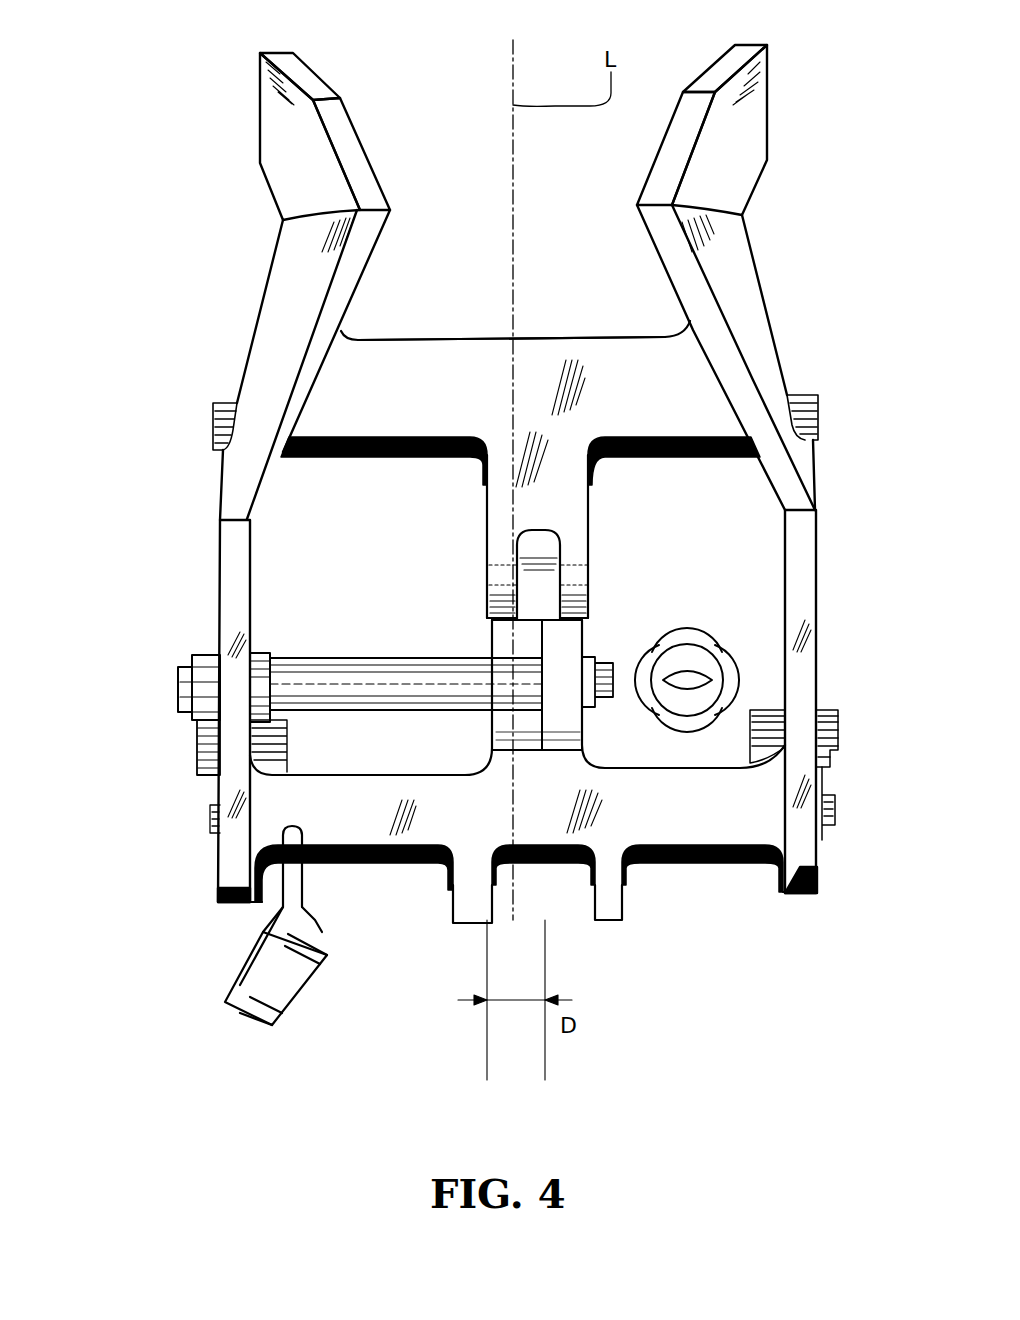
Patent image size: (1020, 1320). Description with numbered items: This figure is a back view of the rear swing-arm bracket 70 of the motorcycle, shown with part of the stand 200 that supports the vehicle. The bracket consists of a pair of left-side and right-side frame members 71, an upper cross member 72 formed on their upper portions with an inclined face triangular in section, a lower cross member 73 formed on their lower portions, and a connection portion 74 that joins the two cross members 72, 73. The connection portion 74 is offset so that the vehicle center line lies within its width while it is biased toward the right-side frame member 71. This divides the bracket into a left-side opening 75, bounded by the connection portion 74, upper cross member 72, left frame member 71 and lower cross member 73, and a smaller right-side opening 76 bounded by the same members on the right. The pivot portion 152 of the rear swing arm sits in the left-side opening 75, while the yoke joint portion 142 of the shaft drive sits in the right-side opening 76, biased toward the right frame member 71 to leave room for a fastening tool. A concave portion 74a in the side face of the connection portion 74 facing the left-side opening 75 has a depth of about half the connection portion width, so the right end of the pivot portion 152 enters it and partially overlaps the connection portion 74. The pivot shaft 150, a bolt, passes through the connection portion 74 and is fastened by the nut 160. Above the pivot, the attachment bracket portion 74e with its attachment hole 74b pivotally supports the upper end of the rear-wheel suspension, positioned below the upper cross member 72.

The rear swing-arm bracket 70 is at (233, 322).
The frame member 71 is at (215, 557).
The upper cross member 72 is at (408, 340).
The lower cross member 73 is at (667, 808).
The connection portion 74 is at (590, 506).
The concave portion 74a is at (503, 638).
The attachment hole 74b is at (500, 581).
The attachment bracket portion 74e is at (537, 595).
The left-side opening 75 is at (384, 526).
The right-side opening 76 is at (732, 526).
The yoke joint portion 142 is at (703, 620).
The pivot shaft 150 is at (178, 684).
The pivot portion 152 is at (340, 660).
The nut 160 is at (590, 656).
The stand 200 is at (300, 993).